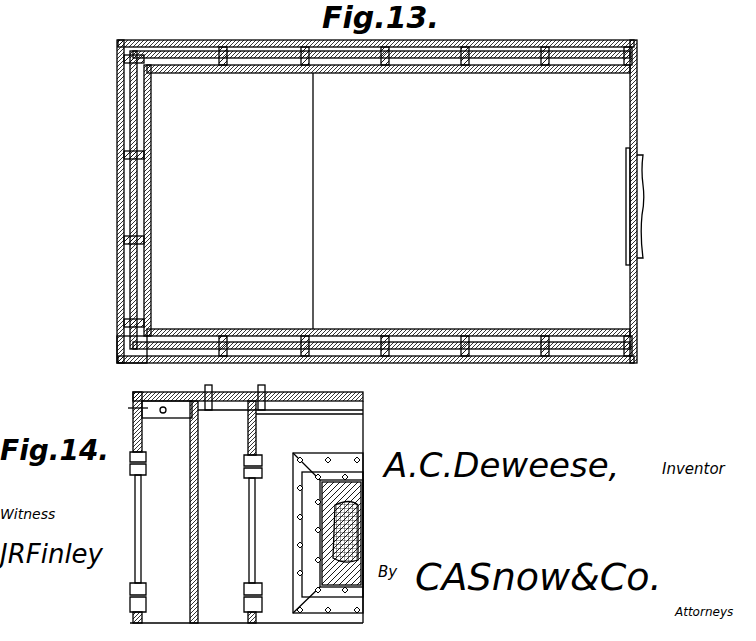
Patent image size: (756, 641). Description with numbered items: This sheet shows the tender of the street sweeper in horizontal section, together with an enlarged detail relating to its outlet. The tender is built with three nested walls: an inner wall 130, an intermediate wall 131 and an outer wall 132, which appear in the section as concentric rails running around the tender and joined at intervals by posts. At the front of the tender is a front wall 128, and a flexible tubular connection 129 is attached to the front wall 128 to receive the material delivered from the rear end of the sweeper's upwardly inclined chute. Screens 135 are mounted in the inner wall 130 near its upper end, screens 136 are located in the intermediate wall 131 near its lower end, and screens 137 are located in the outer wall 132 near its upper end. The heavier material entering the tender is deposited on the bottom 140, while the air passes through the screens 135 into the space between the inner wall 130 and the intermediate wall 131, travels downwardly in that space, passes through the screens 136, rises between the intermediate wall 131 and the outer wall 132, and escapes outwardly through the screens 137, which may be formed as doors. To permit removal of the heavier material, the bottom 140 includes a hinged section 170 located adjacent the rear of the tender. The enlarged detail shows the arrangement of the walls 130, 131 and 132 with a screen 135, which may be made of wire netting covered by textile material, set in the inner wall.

In FIG. 13, the front wall 128 is at (636, 133).
In FIG. 13, the flexible tubular connection 129 is at (640, 210).
In FIG. 13, the inner wall 130 is at (365, 74).
In FIG. 14, the inner wall 130 is at (256, 442).
In FIG. 13, the intermediate wall 131 is at (134, 217).
In FIG. 14, the intermediate wall 131 is at (198, 528).
In FIG. 13, the outer wall 132 is at (118, 338).
In FIG. 14, the outer wall 132 is at (133, 428).
In FIG. 13, the screens 135 is at (157, 128).
In FIG. 14, the screens 135 is at (347, 523).
In FIG. 13, the screens 136 is at (547, 72).
In FIG. 13, the screens 137 is at (313, 42).
In FIG. 14, the screens 137 is at (133, 514).
In FIG. 13, the bottom 140 is at (538, 201).
In FIG. 13, the hinged section 170 is at (260, 201).